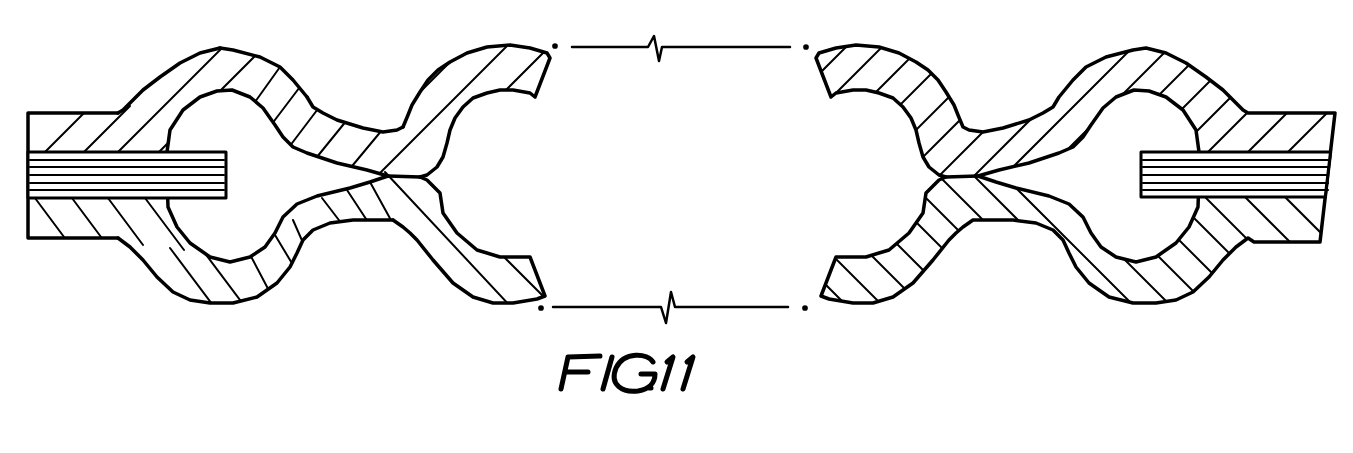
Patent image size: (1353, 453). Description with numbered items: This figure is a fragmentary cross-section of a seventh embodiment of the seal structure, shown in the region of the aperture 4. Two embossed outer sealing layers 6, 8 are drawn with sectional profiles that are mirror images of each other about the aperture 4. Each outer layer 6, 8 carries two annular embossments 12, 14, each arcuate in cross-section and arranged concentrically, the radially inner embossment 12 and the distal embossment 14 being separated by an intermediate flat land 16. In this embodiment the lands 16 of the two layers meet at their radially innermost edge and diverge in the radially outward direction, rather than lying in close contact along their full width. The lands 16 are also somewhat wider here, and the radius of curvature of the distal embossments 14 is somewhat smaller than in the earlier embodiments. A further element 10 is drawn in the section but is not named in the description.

The aperture 4 is at (698, 197).
The outer sealing layer 6 is at (198, 47).
The outer sealing layer 8 is at (220, 304).
The flat strip 10 is at (73, 167).
The annular embossment 12 is at (262, 68).
The distal embossment 14 is at (463, 67).
The intermediate flat land 16 is at (353, 135).